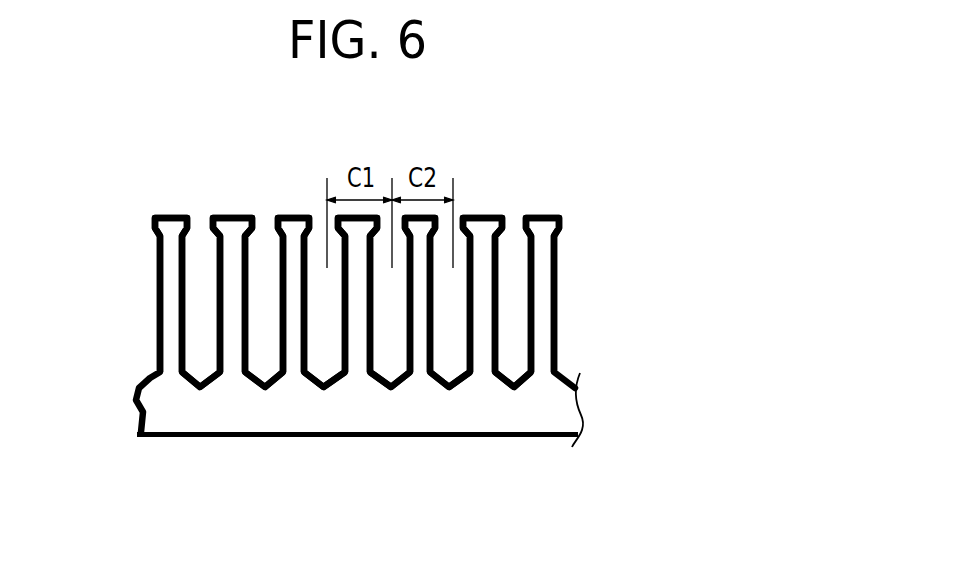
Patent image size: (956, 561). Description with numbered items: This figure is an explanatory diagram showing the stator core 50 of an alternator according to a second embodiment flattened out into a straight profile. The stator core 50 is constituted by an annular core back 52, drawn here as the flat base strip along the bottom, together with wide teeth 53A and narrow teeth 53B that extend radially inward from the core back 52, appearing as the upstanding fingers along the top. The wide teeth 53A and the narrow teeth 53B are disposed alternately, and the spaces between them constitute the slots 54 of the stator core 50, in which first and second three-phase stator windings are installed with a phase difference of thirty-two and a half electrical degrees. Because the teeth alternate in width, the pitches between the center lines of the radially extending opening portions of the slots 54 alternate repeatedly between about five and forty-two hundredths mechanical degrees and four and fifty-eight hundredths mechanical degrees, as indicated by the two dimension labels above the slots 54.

The stator core 50 is at (560, 408).
The annular core back 52 is at (442, 410).
The wide teeth 53A is at (483, 265).
The narrow teeth 53B is at (543, 276).
The slots 54 is at (513, 337).